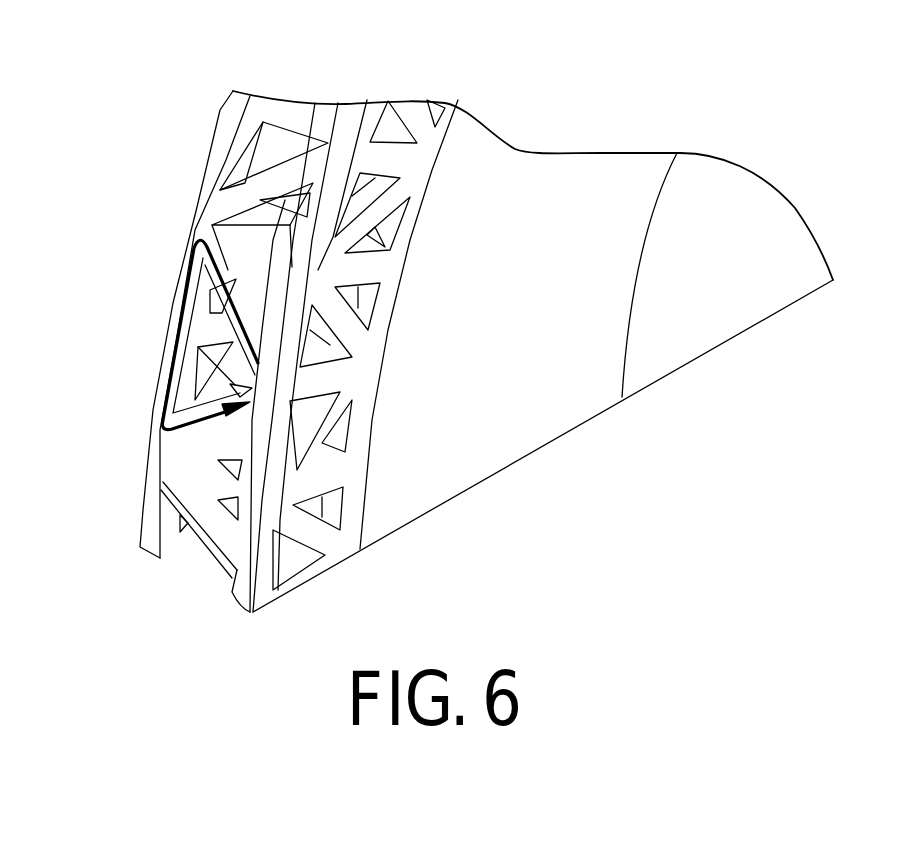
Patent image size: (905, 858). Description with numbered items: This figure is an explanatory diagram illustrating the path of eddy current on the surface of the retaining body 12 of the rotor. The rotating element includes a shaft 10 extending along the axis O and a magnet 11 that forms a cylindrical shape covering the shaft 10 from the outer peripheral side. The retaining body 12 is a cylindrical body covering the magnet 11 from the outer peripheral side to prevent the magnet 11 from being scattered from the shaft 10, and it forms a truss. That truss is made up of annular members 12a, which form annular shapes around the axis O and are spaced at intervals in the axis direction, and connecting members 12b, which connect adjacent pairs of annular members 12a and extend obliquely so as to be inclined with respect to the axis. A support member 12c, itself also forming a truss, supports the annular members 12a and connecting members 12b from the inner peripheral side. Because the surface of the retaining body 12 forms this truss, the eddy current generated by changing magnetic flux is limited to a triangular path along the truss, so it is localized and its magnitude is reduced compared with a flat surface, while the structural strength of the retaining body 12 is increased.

The shaft 10 is at (725, 293).
The magnet 11 is at (513, 410).
The retaining body 12 is at (192, 198).
The annular member 12a is at (297, 263).
The connecting member 12b is at (238, 290).
The support member 12c is at (330, 377).